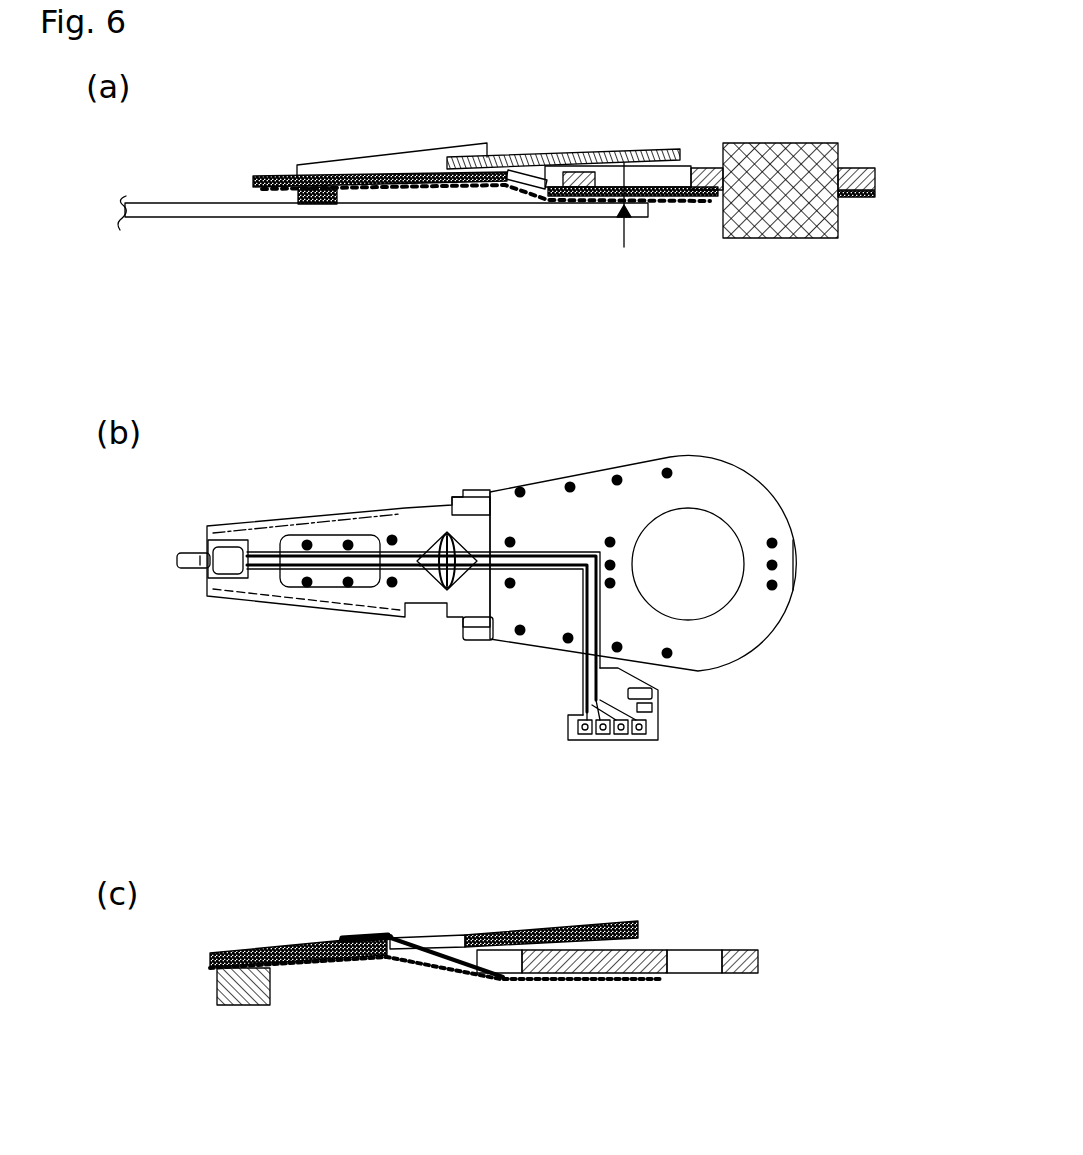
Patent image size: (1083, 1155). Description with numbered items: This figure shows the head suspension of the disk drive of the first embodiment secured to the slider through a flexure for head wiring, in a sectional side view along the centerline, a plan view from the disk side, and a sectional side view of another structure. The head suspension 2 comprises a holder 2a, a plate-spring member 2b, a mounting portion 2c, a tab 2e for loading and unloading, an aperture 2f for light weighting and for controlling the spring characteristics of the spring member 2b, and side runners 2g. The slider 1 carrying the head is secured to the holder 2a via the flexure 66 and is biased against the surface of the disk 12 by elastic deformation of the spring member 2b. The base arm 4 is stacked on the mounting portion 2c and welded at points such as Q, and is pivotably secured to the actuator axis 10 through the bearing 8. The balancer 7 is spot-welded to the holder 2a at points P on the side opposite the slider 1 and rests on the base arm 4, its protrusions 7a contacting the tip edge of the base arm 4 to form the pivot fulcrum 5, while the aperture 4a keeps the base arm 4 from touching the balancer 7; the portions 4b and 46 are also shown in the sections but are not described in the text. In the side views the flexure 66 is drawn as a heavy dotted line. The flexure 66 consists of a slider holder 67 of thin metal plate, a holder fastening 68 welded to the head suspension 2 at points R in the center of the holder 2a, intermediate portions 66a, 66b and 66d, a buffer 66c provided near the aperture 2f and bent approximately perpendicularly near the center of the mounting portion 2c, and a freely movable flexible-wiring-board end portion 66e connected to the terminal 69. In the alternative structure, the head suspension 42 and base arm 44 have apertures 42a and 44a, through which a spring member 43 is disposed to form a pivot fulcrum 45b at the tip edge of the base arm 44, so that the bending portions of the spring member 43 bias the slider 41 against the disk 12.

The slider 1 is at (318, 178).
The head suspension 2 is at (732, 270).
The head holder 2a is at (380, 190).
The spring member 2b is at (523, 178).
The mounting portion 2c is at (679, 200).
The tab 2e is at (273, 188).
The aperture 2f is at (512, 194).
The side runners 2g is at (397, 160).
The base arm 4 is at (858, 170).
The aperture 4a is at (638, 176).
The holder block 4b is at (577, 173).
The pivot fulcrum 5 is at (540, 153).
The balancer 7 is at (593, 153).
The protrusions 7a is at (448, 618).
The bearing 8 is at (697, 958).
The actuator axis 10 is at (765, 150).
The disk 12 is at (208, 207).
The slider 41 is at (240, 1008).
The head suspension 42 is at (307, 968).
The aperture 42a is at (445, 940).
The spring member 43 is at (367, 936).
The base arm 44 is at (643, 950).
The aperture 44a is at (505, 965).
The pivot fulcrum 45b is at (473, 954).
The fixing portion 46 is at (473, 160).
The flexure 66 is at (430, 190).
The intermediate portion 66a is at (270, 550).
The intermediate portion 66b is at (390, 552).
The buffer 66c is at (440, 545).
The intermediate portion 66d is at (545, 552).
The end portion 66e is at (592, 598).
The slider holder 67 is at (230, 546).
The holder fastening 68 is at (323, 543).
The terminal 69 is at (613, 702).
The welding points P is at (382, 596).
The welding points Q is at (560, 652).
The welding points R is at (305, 585).